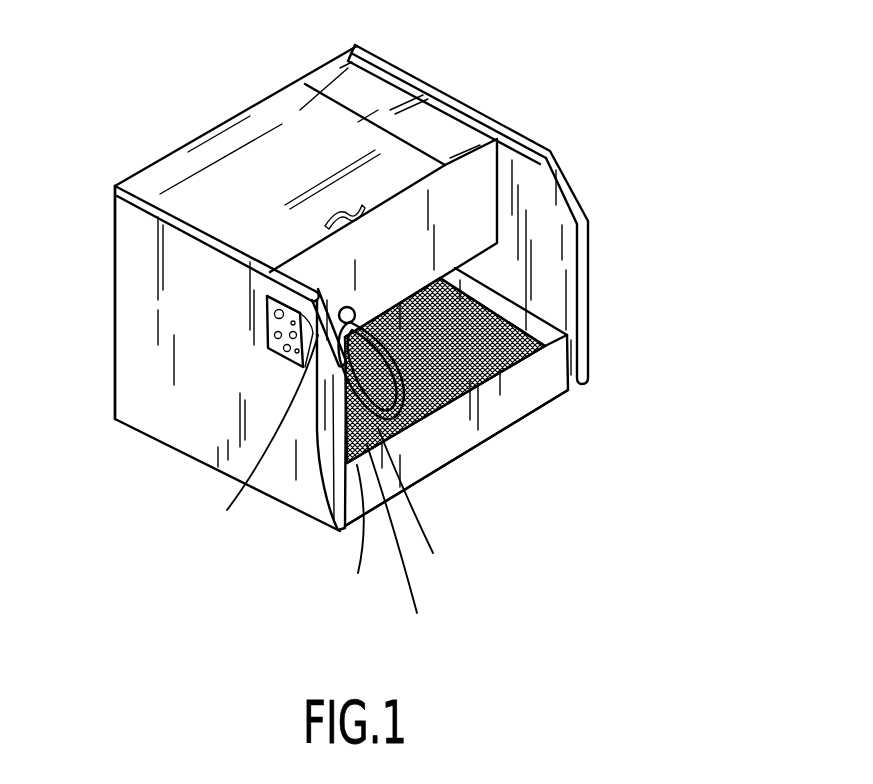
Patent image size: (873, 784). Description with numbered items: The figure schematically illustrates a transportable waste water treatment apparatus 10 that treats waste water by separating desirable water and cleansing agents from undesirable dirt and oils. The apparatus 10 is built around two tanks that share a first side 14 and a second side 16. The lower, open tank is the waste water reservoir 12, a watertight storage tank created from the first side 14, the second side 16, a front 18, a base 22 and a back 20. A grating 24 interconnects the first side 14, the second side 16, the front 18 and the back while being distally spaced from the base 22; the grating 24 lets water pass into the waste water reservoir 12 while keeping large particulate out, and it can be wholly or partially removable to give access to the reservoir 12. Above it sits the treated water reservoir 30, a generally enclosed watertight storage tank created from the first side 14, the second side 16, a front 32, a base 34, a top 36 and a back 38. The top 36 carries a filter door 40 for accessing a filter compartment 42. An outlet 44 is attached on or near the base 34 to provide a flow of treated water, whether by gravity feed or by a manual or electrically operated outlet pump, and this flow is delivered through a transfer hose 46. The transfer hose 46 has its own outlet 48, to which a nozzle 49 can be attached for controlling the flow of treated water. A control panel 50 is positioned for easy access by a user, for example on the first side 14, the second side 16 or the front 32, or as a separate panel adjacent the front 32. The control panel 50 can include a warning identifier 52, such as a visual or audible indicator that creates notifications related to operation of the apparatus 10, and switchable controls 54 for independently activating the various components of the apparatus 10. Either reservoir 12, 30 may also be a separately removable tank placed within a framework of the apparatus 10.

The transportable waste water treatment apparatus 10 is at (478, 48).
The waste water reservoir 12 is at (537, 392).
The first side 14 is at (212, 401).
The second side 16 is at (578, 205).
The front 18 is at (464, 443).
The back 20 is at (113, 372).
The base 22 is at (437, 467).
The grating 24 is at (533, 357).
The treated water reservoir 30 is at (268, 135).
The front 32 is at (410, 257).
The base 34 is at (482, 252).
The top 36 is at (257, 202).
The back 38 is at (150, 170).
The filter door 40 is at (377, 108).
The filter compartment 42 is at (402, 140).
The outlet 44 is at (323, 462).
The transfer hose 46 is at (404, 445).
The outlet 48 is at (409, 539).
The nozzle 49 is at (348, 533).
The control panel 50 is at (260, 327).
The warning identifier 52 is at (272, 306).
The switchable controls 54 is at (257, 433).